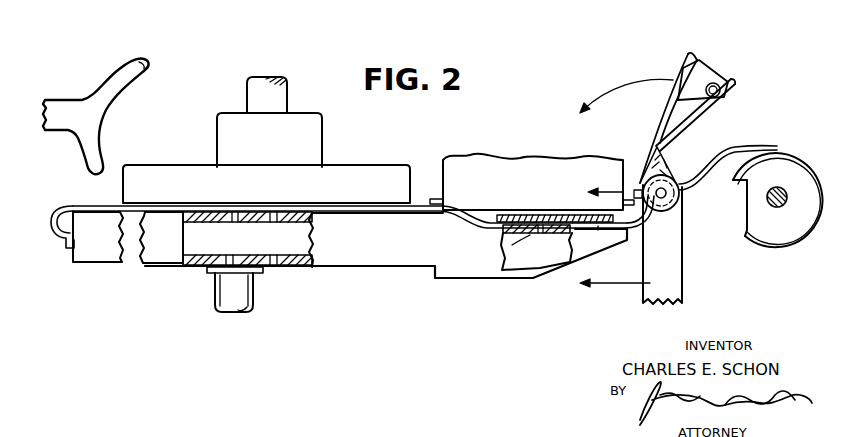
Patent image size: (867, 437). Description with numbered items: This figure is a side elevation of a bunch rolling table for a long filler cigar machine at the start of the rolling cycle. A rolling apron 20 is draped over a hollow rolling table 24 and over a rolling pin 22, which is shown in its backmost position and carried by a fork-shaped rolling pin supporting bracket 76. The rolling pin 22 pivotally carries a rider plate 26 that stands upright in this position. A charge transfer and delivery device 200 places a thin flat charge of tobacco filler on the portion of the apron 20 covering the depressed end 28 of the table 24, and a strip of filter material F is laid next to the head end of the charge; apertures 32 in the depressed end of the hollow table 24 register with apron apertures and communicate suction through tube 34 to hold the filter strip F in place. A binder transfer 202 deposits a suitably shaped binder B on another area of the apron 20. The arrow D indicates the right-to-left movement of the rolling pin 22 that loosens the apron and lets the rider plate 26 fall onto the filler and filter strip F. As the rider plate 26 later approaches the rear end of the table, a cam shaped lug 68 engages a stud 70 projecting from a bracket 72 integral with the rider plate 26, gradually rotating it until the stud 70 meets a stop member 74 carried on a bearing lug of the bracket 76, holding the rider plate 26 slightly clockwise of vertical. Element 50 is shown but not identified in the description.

The cam shaped lug 68 is at (146, 68).
The binder transfer 202 is at (323, 148).
The rolling apron 20 is at (108, 212).
The binder B is at (295, 207).
The charge transfer and delivery device 200 is at (468, 159).
The strip of filter material F is at (548, 218).
The arrow indicating direction of rolling pin movement D is at (620, 178).
The spacer assembly 50 is at (235, 223).
The tube 34 is at (253, 295).
The rolling table 24 is at (360, 264).
The apertures 32 is at (500, 255).
The depressed end 28 is at (599, 230).
The rolling pin 22 is at (678, 214).
The rolling pin supporting bracket 76 is at (668, 268).
The rider plate 26 is at (669, 108).
The stop member 74 is at (713, 113).
The bracket 72 is at (698, 78).
The stud 70 is at (721, 87).